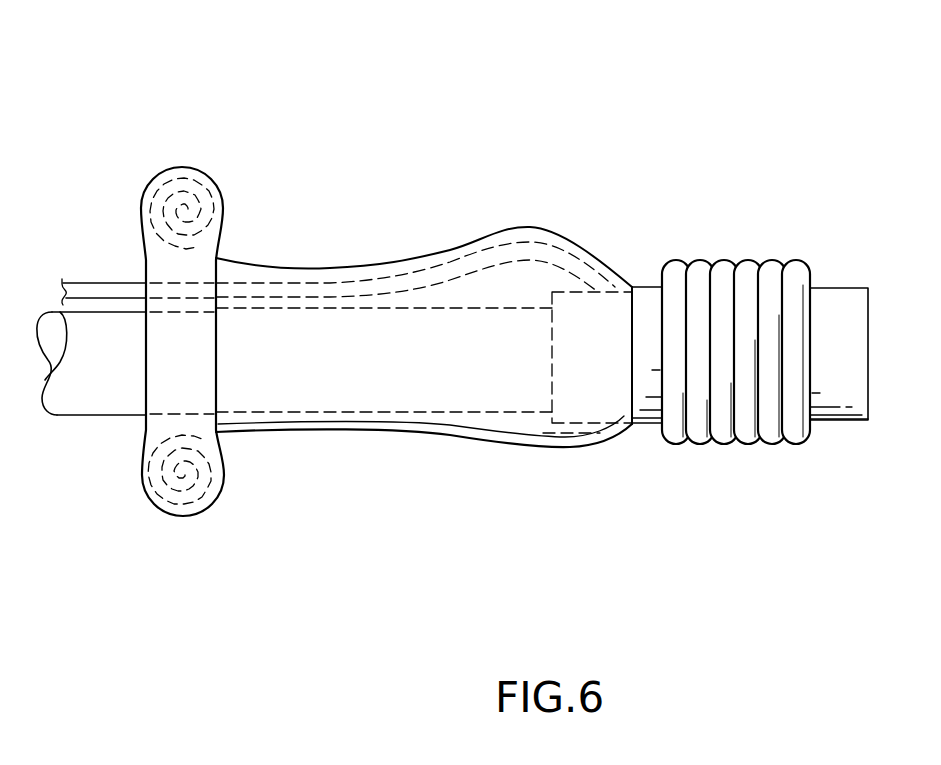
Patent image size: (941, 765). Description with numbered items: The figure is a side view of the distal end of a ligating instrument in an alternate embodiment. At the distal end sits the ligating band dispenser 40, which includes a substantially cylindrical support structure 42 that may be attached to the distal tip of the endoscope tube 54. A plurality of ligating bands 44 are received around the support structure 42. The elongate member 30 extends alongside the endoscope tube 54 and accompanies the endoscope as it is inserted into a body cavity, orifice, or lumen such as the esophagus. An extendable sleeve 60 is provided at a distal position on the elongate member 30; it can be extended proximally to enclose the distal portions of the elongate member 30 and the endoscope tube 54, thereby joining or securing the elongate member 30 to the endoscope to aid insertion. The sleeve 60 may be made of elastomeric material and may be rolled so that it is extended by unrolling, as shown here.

The elongate member 30 is at (480, 256).
The ligating band dispenser 40 is at (764, 244).
The support structure 42 is at (832, 288).
The ligating bands 44 is at (688, 262).
The endoscope tube 54 is at (462, 410).
The extendable sleeve 60 is at (428, 258).